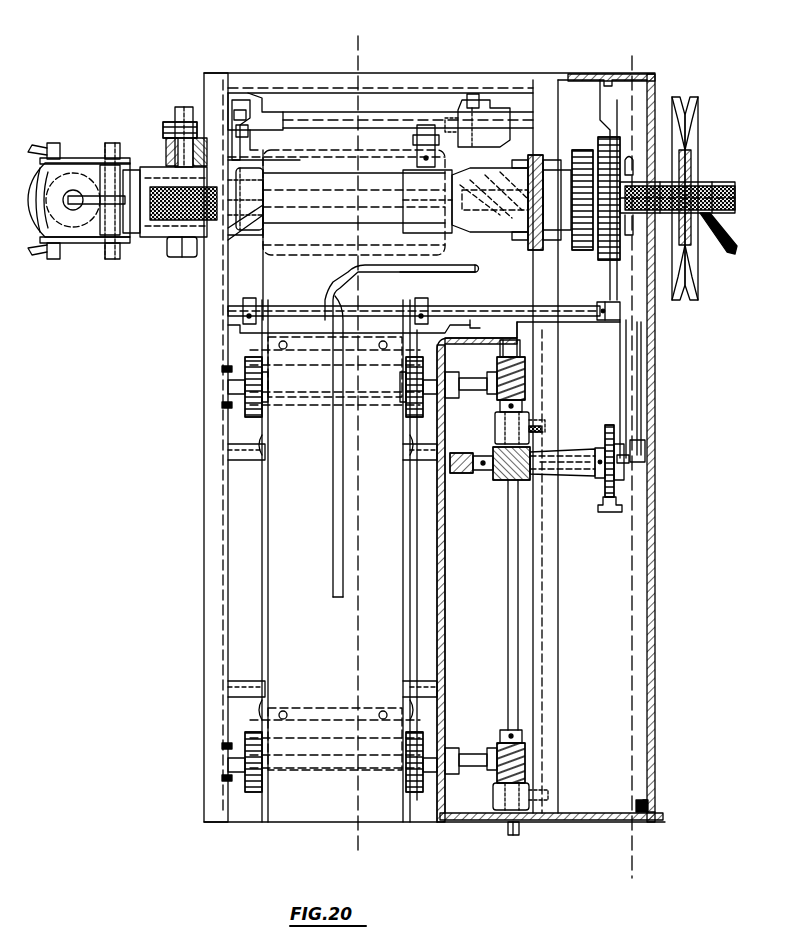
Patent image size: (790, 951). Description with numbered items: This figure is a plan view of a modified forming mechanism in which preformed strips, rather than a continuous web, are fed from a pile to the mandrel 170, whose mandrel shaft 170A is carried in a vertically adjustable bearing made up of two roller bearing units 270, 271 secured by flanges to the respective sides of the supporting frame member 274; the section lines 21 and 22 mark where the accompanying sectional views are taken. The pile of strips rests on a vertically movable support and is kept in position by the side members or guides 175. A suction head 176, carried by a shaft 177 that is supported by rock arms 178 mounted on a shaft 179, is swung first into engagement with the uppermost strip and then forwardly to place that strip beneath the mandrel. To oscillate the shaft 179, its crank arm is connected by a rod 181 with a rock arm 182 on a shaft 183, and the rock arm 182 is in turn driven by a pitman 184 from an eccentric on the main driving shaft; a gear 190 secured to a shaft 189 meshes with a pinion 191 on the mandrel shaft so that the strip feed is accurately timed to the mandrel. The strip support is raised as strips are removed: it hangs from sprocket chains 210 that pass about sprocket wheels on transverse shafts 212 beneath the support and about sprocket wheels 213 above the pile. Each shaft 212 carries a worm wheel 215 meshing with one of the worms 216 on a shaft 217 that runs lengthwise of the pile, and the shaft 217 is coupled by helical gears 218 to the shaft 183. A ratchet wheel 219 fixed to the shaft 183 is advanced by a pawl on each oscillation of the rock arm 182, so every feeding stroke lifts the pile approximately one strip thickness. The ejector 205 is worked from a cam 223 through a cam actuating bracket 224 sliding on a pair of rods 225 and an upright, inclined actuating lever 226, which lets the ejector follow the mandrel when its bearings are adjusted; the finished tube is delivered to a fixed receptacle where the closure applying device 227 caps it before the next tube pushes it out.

The section line 21— 21 is at (357, 445).
The section line 22— 22 is at (628, 466).
The mandrel 170 is at (277, 228).
The mandrel shaft 170A is at (713, 192).
The side members or guides 175 is at (262, 533).
The suction head 176 is at (333, 315).
The shaft 177 is at (402, 309).
The rock arms 178 is at (252, 315).
The shaft 179 is at (457, 316).
The rod 181 is at (623, 366).
The rock arm 182 is at (624, 468).
The shaft 183 is at (591, 476).
The pitman 184 is at (638, 385).
The shaft 189 is at (713, 184).
The gear 190 is at (585, 152).
The pinion 191 is at (588, 238).
The ejector 205 is at (427, 216).
The sprocket chains 210 is at (447, 371).
The transverse shafts 212 is at (472, 383).
The sprocket wheels 213 is at (252, 390).
The worm wheel 215 is at (512, 356).
The worms 216 is at (522, 378).
The shaft 217 is at (512, 625).
The helical gears 218 is at (495, 468).
The ratchet wheel 219 is at (606, 440).
The cam 223 is at (507, 166).
The cam actuating bracket 224 is at (487, 108).
The rods 225 is at (395, 116).
The actuating lever 226 is at (447, 138).
The closure applying device 227 is at (105, 227).
The roller bearing unit 270 is at (519, 234).
The roller bearing unit 271 is at (560, 222).
The supporting frame member 274 is at (460, 266).